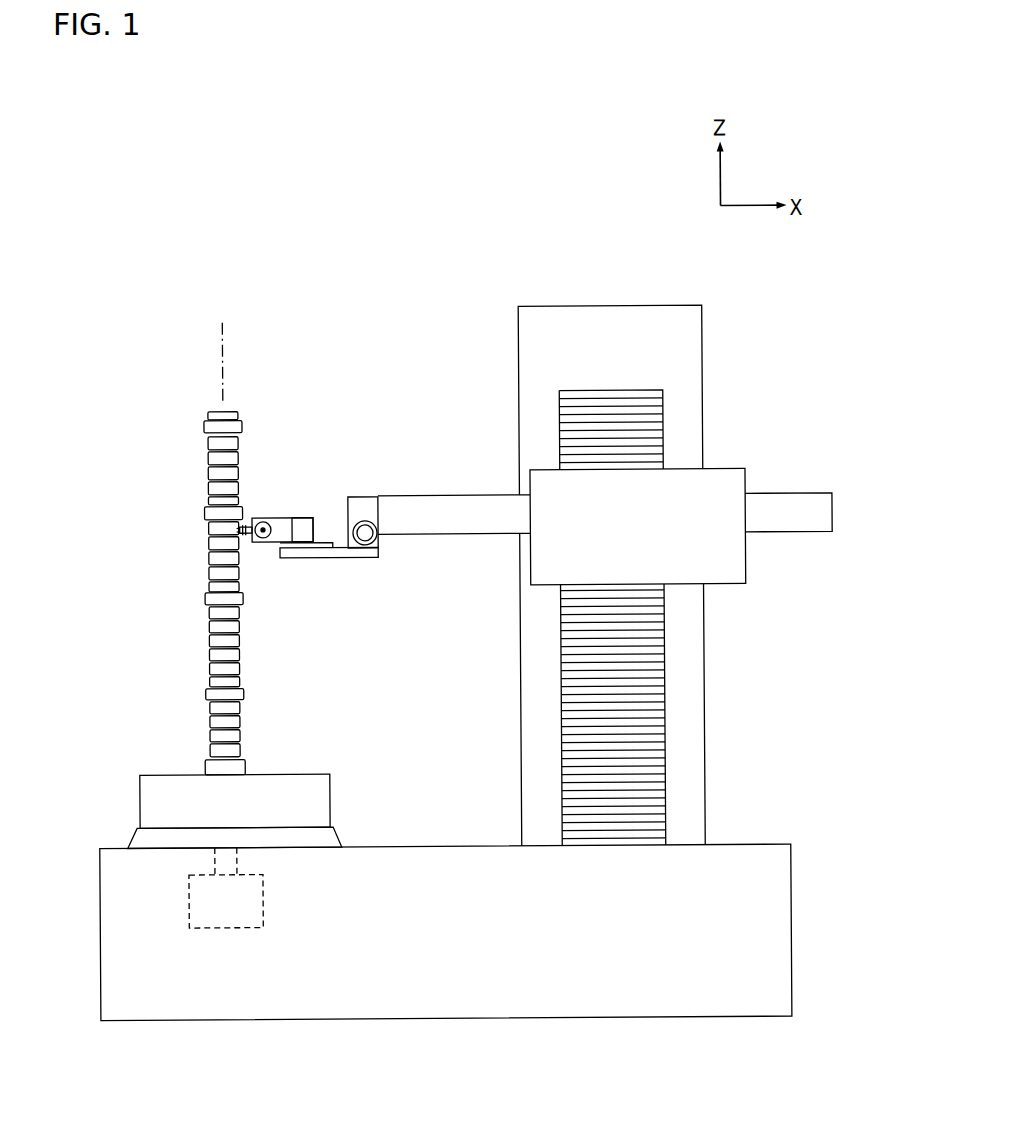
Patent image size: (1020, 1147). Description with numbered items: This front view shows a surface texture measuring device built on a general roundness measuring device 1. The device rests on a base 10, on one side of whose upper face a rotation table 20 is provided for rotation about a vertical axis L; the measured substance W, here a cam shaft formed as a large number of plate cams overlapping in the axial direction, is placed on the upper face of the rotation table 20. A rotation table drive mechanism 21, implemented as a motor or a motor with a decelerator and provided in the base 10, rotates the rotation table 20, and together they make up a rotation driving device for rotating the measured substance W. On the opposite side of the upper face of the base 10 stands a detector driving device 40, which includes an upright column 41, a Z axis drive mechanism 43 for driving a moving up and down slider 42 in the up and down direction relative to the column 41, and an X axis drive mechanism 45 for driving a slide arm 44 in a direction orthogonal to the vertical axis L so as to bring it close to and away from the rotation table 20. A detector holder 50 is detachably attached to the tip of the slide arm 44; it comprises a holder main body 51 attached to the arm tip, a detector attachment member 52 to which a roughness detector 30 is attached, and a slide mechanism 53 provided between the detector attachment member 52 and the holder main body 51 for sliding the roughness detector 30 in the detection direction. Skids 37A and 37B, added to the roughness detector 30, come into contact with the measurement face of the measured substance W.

The roundness measuring device 1 is at (303, 250).
The base 10 is at (453, 1012).
The rotation table 20 is at (170, 783).
The rotation table drive mechanism 21 is at (187, 921).
The roughness detector 30 is at (268, 519).
The skid 37A is at (247, 525).
The skid 37B is at (248, 533).
The detector driving device 40 is at (474, 333).
The column 41 is at (692, 306).
The moving up and down slider 42 is at (728, 474).
The Z axis drive mechanism 43 is at (643, 404).
The slide arm 44 is at (805, 534).
The X axis drive mechanism 45 is at (715, 567).
The detector holder 50 is at (328, 539).
The holder main body 51 is at (305, 557).
The detector attachment member 52 is at (305, 516).
The slide mechanism 53 is at (333, 541).
The measured substance W is at (205, 426).
The vertical axis L is at (220, 351).